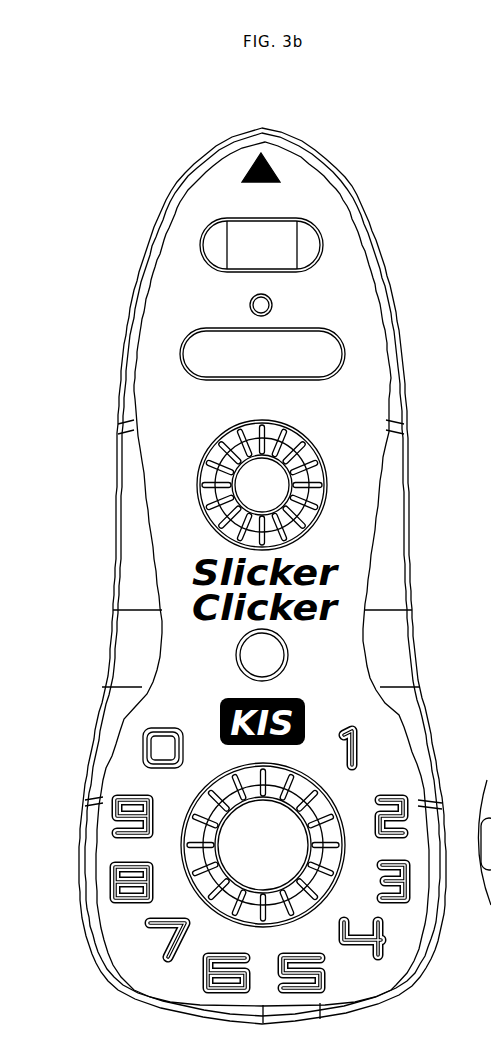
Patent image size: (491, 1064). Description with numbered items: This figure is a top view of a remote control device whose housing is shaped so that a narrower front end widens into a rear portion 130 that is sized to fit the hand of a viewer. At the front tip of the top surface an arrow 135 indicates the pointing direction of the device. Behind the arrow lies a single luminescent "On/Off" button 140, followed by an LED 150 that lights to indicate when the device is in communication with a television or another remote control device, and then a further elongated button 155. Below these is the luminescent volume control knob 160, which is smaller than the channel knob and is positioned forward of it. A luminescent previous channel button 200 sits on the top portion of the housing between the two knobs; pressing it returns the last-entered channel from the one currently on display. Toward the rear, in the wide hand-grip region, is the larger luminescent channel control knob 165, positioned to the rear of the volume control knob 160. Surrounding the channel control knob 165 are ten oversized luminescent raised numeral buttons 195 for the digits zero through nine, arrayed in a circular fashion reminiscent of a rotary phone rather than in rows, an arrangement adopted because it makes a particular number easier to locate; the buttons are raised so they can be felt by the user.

The rear portion 130 is at (412, 937).
The arrow 135 is at (243, 165).
The "On/Off" button 140 is at (263, 246).
The LED 150 is at (236, 301).
The function button 155 is at (270, 348).
The volume control knob 160 is at (252, 478).
The channel control knob 165 is at (255, 828).
The numeral buttons 195 is at (143, 940).
The previous channel button 200 is at (260, 645).